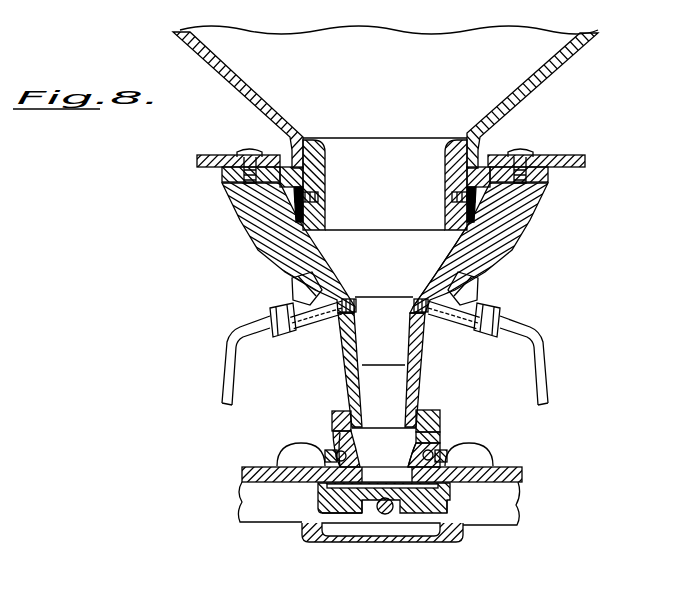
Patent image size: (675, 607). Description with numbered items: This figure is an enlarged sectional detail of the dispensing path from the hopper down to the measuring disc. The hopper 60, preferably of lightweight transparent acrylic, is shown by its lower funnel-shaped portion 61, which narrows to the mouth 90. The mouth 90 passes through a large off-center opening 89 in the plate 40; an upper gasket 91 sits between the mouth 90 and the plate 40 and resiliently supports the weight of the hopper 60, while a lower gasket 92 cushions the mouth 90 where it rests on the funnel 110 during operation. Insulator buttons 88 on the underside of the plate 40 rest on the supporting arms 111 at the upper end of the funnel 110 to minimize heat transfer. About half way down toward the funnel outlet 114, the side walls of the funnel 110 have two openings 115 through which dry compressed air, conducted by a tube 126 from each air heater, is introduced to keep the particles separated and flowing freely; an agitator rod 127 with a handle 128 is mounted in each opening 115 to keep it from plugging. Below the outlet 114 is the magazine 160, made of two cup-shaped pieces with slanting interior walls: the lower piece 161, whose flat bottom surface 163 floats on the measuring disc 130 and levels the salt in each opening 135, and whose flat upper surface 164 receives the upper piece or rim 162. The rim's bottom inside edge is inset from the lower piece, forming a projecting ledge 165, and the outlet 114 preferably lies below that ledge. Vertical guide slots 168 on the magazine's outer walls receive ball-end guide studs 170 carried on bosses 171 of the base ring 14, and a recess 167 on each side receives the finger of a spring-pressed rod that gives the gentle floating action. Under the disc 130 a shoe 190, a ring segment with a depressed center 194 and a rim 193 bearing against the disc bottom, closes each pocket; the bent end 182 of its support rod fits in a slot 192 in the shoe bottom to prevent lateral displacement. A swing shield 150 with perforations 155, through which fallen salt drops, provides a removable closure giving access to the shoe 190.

The base ring 14 is at (508, 515).
The plate 40 is at (212, 157).
The hopper 60 is at (337, 246).
The lower funnel-shaped portion 61 is at (242, 97).
The insulator buttons 88 is at (222, 170).
The opening 89 is at (303, 182).
The mouth 90 is at (332, 226).
The upper gasket 91 is at (303, 172).
The lower gasket 92 is at (277, 238).
The funnel head 110 is at (475, 250).
The supporting arms 111 is at (337, 303).
The mouth of the funnel 114 is at (397, 402).
The openings 115 is at (343, 323).
The tube 126 is at (288, 273).
The agitator rod 127 is at (414, 303).
The handle 128 is at (228, 378).
The measuring disc 130 is at (522, 475).
The opening 135 is at (387, 474).
The swing shield 150 is at (337, 303).
The perforations 155 is at (408, 541).
The magazine 160 is at (333, 417).
The lower piece 161 is at (330, 440).
The upper piece 162 is at (438, 413).
The flat bottom surface 163 is at (325, 484).
The upper surface 164 is at (440, 428).
The ledge 165 is at (425, 432).
The recess 167 is at (340, 433).
The guide slots 168 is at (323, 447).
The guide stud 170 is at (325, 458).
The bosses 171 is at (280, 458).
The bent end 182 is at (388, 514).
The shoe 190 is at (437, 502).
The slot 192 is at (368, 515).
The rim 193 is at (328, 484).
The depressed center 194 is at (328, 511).